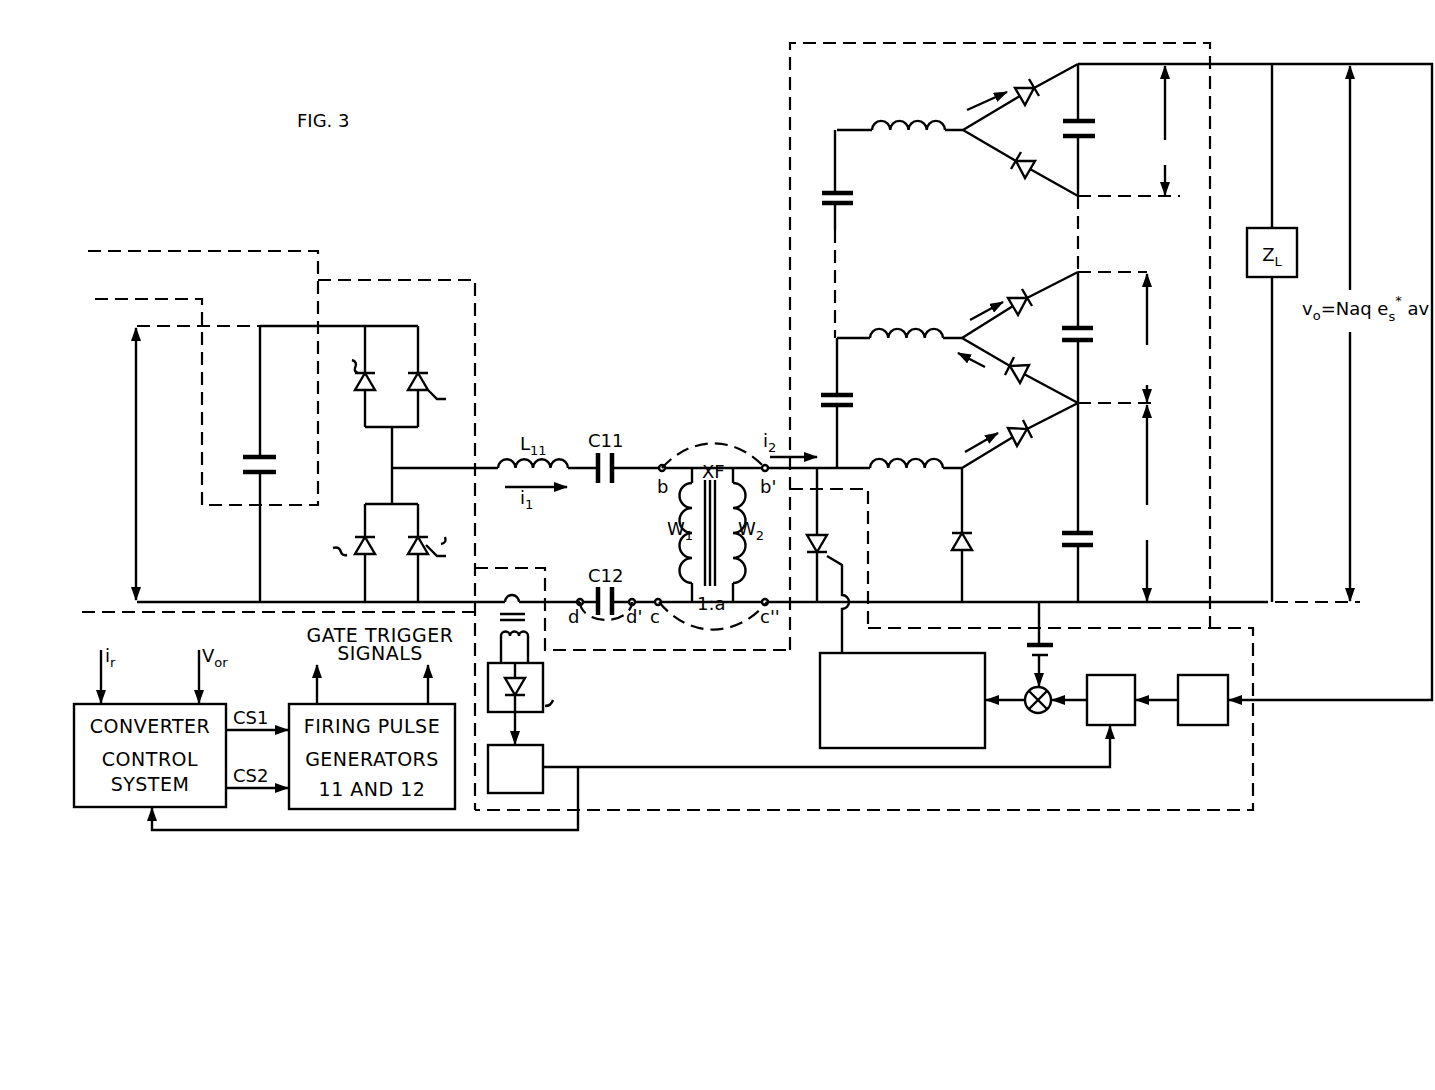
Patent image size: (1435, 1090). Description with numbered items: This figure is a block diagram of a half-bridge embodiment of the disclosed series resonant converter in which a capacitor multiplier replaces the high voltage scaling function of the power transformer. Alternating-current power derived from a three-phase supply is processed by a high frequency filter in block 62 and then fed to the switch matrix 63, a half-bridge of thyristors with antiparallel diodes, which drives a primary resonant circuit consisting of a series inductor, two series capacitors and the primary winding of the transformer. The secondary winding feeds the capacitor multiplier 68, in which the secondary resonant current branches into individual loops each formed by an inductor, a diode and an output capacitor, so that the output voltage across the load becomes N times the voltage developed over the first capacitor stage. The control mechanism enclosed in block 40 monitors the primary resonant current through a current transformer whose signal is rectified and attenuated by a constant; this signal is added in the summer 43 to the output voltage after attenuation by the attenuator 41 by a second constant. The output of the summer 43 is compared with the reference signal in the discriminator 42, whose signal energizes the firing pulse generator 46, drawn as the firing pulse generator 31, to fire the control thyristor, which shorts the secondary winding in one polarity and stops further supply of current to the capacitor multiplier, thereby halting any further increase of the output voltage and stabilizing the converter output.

The high frequency filter 62 is at (252, 244).
The switch matrix 63 is at (407, 275).
The output rectifier voltage multiplier 68 is at (787, 262).
The output voltage detector and stabilizing subsystem 40 is at (1253, 786).
The attenuator 41 is at (1221, 666).
The discriminator 42 is at (1034, 710).
The summer 43 is at (1098, 668).
The firing pulse generator 46 is at (1036, 644).
The firing pulse generator 31 is at (902, 700).